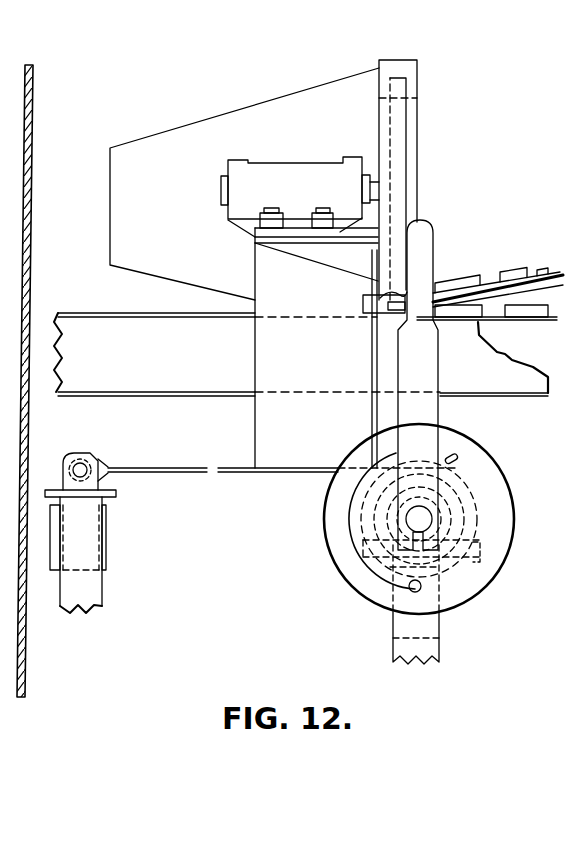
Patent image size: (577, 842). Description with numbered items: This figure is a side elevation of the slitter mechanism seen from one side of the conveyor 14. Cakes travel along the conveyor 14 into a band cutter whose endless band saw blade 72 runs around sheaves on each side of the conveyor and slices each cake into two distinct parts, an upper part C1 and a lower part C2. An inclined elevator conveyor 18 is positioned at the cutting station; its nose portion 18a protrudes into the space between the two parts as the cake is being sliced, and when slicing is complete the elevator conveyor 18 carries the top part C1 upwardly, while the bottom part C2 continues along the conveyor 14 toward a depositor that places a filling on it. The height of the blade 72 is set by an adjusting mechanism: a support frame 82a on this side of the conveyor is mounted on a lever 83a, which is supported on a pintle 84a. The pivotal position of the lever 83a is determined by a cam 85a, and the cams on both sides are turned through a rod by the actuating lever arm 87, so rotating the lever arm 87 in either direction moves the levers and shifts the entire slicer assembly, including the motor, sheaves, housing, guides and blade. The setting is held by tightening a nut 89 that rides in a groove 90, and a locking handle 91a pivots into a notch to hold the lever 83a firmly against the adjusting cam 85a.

The conveyor 14 is at (505, 321).
The elevator conveyor 18 is at (508, 282).
The nose portion 18a is at (457, 301).
The band saw blade 72 is at (378, 313).
The support frame 82a is at (272, 334).
The lever 83a is at (293, 468).
The pintle 84a is at (80, 452).
The cam 85a is at (473, 500).
The lever arm 87 is at (427, 413).
The nut 89 is at (409, 589).
The groove 90 is at (350, 515).
The locking handle 91a is at (455, 457).
The top part of cake C1 is at (366, 296).
The bottom part of cake C2 is at (467, 313).